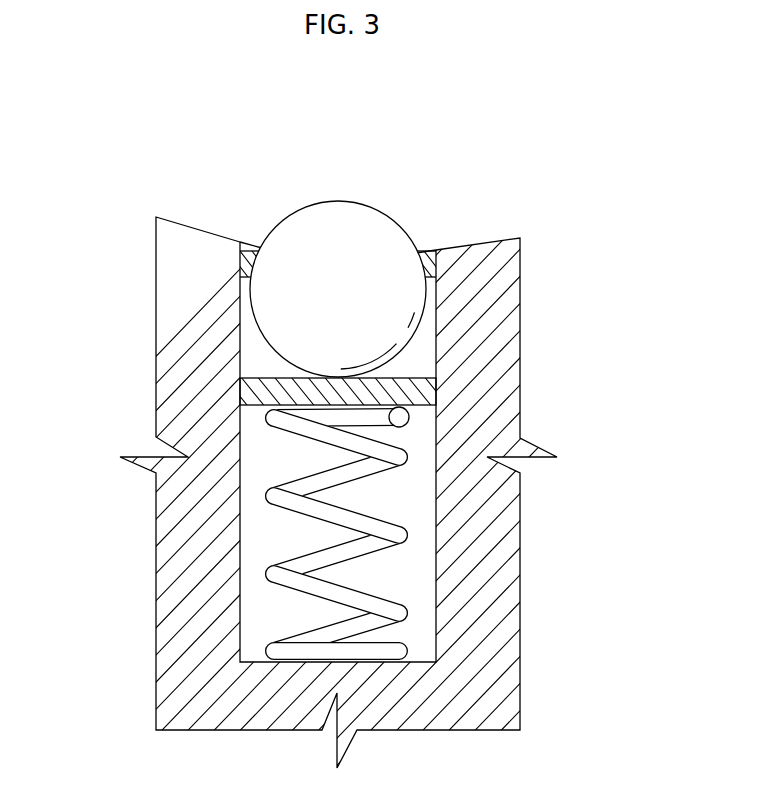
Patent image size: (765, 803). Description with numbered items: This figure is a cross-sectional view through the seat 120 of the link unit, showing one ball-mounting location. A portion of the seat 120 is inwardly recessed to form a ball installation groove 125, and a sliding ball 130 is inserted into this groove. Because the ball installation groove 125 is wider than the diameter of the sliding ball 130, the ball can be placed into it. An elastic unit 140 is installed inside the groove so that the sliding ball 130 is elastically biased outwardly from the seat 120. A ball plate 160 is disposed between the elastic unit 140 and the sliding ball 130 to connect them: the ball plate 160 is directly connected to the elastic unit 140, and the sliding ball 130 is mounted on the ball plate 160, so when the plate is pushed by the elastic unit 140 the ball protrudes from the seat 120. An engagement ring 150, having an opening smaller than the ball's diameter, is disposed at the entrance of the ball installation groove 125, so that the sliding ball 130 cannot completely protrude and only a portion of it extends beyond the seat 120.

The seat 120 is at (195, 222).
The ball installation groove 125 is at (270, 503).
The sliding ball 130 is at (332, 223).
The elastic unit 140 is at (390, 532).
The engagement ring 150 is at (420, 252).
The ball plate 160 is at (432, 393).